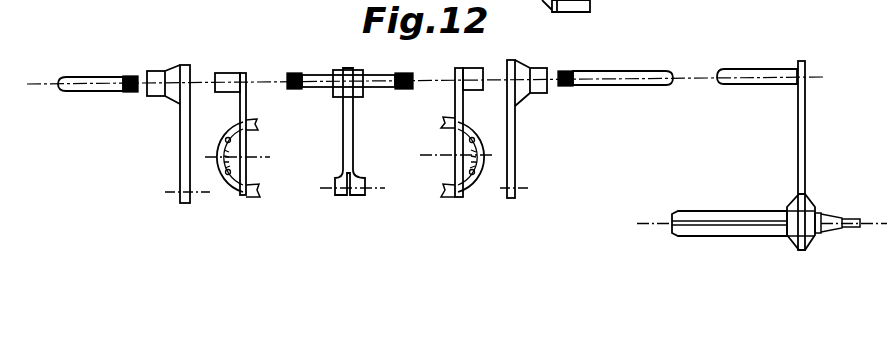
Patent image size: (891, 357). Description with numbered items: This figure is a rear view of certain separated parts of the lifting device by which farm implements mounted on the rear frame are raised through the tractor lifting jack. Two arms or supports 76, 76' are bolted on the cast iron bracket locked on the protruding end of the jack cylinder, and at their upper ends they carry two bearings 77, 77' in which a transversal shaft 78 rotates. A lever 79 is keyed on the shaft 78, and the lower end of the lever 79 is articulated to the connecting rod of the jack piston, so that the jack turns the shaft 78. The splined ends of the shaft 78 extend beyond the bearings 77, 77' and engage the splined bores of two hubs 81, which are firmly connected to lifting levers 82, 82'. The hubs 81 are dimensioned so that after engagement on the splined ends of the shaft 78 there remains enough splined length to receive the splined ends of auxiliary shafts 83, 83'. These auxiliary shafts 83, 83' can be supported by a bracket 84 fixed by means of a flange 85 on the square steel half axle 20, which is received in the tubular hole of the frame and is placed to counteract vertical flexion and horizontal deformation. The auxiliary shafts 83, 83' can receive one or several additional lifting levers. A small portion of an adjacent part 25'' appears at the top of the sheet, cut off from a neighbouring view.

The steel half axle 20 is at (716, 211).
The bracket 25'' is at (544, 10).
The arm or support 76 is at (249, 149).
The arm or support 76' is at (449, 148).
The bearing 77 is at (240, 115).
The bearing 77' is at (487, 117).
The transversal shaft 78 is at (318, 74).
The lever 79 is at (343, 150).
The hub 81 is at (160, 72).
The lifting lever 82 is at (176, 134).
The lifting lever 82' is at (536, 129).
The auxiliary shaft 83 is at (98, 62).
The auxiliary shaft 83' is at (620, 62).
The bracket 84 is at (805, 133).
The flange 85 is at (814, 207).